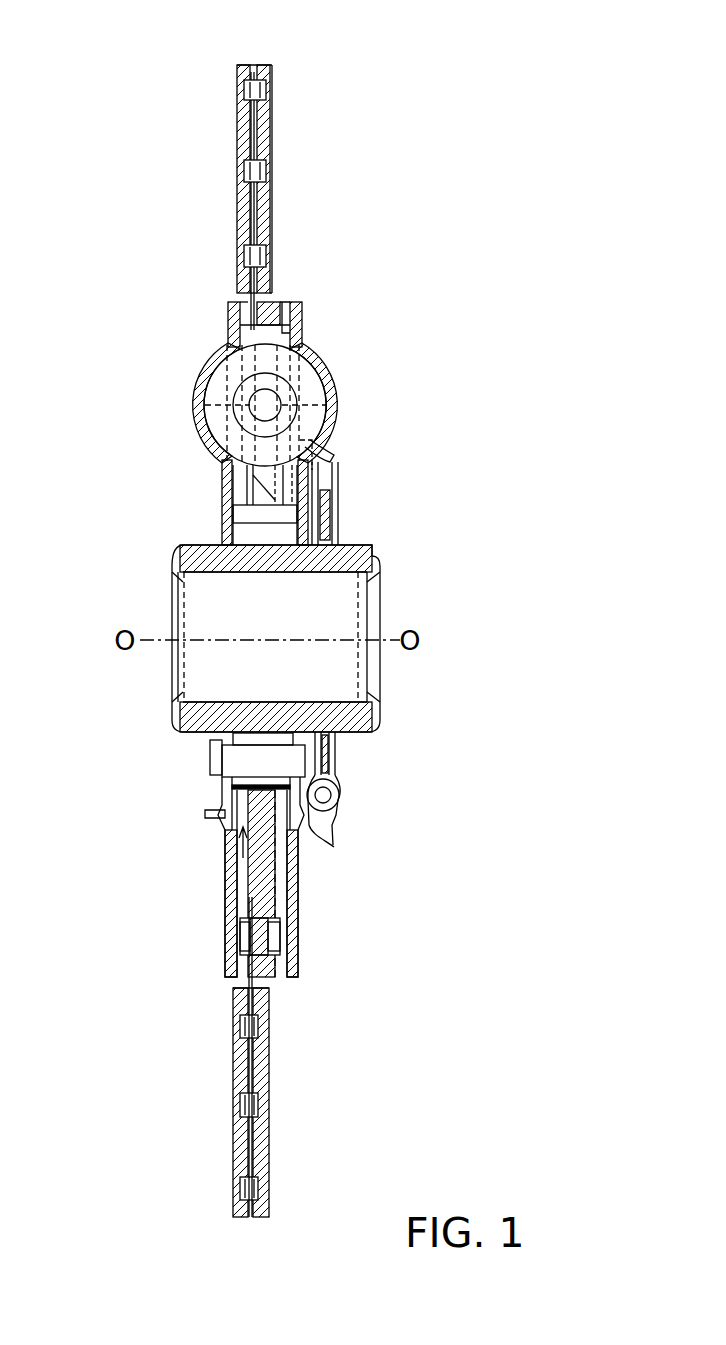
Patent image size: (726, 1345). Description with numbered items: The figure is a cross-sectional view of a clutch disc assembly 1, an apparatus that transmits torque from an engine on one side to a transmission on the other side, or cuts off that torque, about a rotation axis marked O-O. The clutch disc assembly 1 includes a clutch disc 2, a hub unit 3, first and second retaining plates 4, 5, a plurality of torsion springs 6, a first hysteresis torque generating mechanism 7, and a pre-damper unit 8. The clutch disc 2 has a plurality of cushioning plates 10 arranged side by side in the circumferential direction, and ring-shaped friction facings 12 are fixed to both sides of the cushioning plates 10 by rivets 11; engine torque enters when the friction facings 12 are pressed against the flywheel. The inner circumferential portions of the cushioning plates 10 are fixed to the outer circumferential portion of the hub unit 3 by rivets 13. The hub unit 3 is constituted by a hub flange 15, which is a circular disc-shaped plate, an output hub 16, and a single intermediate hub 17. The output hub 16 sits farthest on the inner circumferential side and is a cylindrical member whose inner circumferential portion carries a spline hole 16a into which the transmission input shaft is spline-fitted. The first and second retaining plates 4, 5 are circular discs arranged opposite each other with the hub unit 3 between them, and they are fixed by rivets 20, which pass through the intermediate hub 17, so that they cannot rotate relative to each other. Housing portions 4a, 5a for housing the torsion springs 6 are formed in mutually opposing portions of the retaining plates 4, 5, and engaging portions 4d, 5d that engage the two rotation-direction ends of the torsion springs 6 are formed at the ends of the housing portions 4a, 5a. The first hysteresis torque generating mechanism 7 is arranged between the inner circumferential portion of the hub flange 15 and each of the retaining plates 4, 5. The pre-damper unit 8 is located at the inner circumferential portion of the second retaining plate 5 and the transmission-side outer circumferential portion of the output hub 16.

The clutch disc assembly 1 is at (159, 147).
The clutch disc 2 is at (281, 57).
The hub unit 3 is at (286, 297).
The first retaining plate 4 is at (231, 313).
The housing portion 4a is at (198, 377).
The engaging portion 4d is at (241, 408).
The second retaining plate 5 is at (299, 314).
The housing portion 5a is at (324, 352).
The engaging portion 5d is at (289, 408).
The torsion spring 6 is at (308, 405).
The first hysteresis torque generating mechanism 7 is at (231, 863).
The pre-damper unit 8 is at (367, 796).
The cushioning plate 10 is at (244, 978).
The rivet 11 is at (237, 1107).
The friction facing 12 is at (260, 1142).
The rivet 13 is at (266, 937).
The hub flange 15 is at (266, 888).
The output hub 16 is at (201, 560).
The spline hole 16a is at (218, 700).
The intermediate hub 17 is at (236, 795).
The rivet 20 is at (236, 765).